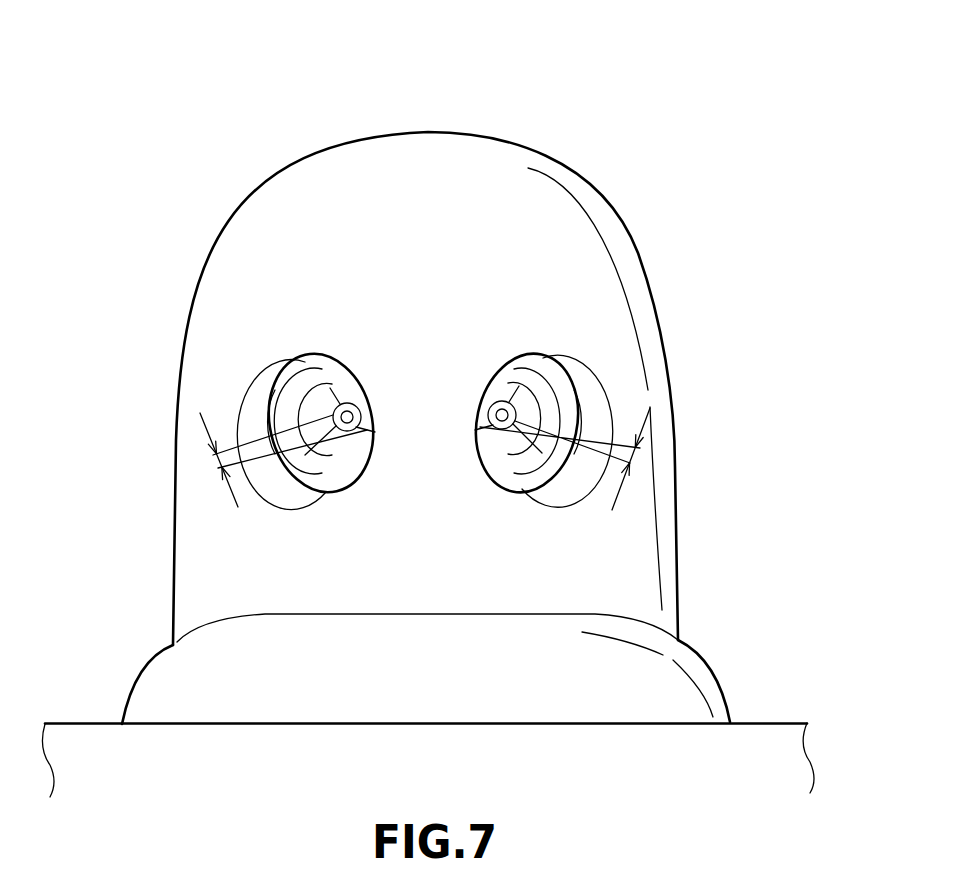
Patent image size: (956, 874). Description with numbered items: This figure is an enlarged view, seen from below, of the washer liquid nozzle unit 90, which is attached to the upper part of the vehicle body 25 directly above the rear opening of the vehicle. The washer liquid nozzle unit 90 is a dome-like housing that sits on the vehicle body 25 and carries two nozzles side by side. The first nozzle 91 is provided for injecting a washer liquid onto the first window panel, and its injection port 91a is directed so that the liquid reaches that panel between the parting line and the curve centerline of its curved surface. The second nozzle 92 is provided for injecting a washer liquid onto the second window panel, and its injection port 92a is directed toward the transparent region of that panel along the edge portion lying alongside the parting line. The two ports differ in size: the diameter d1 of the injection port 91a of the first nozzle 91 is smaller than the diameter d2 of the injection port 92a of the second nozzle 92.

The washer liquid nozzle unit 90 is at (428, 132).
The first nozzle 91 is at (368, 398).
The injection port 91a is at (346, 404).
The second nozzle 92 is at (481, 398).
The injection port 92a is at (502, 402).
The vehicle body 25 is at (768, 740).
The diameter of the injection port of the first nozzle d1 is at (283, 477).
The diameter of the injection port of the second nozzle d2 is at (565, 473).